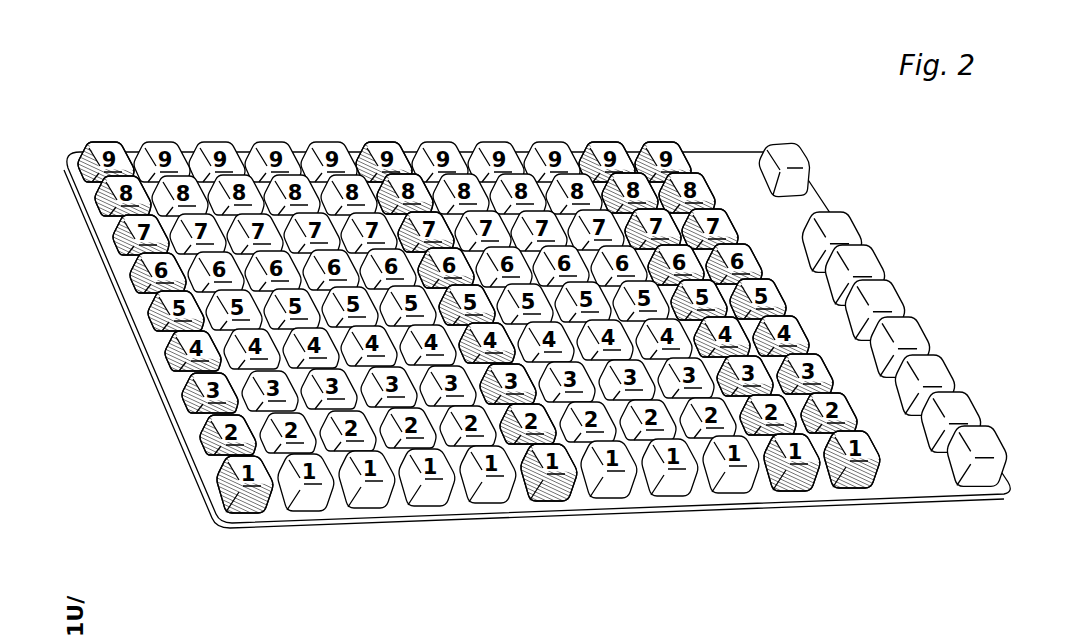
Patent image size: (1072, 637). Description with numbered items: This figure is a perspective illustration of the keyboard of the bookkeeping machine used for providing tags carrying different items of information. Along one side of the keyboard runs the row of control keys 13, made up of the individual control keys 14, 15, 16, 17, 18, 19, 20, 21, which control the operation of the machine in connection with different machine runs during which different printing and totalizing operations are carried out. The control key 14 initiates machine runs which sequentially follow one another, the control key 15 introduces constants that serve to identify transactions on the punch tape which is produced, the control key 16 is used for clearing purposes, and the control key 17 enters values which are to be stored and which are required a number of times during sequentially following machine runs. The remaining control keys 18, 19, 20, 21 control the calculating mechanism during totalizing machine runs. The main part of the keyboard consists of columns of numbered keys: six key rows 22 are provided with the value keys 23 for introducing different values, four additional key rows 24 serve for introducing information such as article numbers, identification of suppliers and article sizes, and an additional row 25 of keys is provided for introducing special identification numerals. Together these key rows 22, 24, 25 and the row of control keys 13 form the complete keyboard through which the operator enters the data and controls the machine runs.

The row of control keys 13 is at (911, 360).
The control key 14 is at (803, 166).
The control key 15 is at (858, 236).
The control key 16 is at (882, 267).
The control key 17 is at (905, 300).
The control key 18 is at (927, 337).
The control key 19 is at (950, 372).
The control key 20 is at (980, 413).
The control key 21 is at (1005, 448).
The key rows 22 is at (538, 520).
The value keys 23 is at (110, 140).
The additional key rows 24 is at (292, 530).
The additional row of keys 25 is at (233, 531).